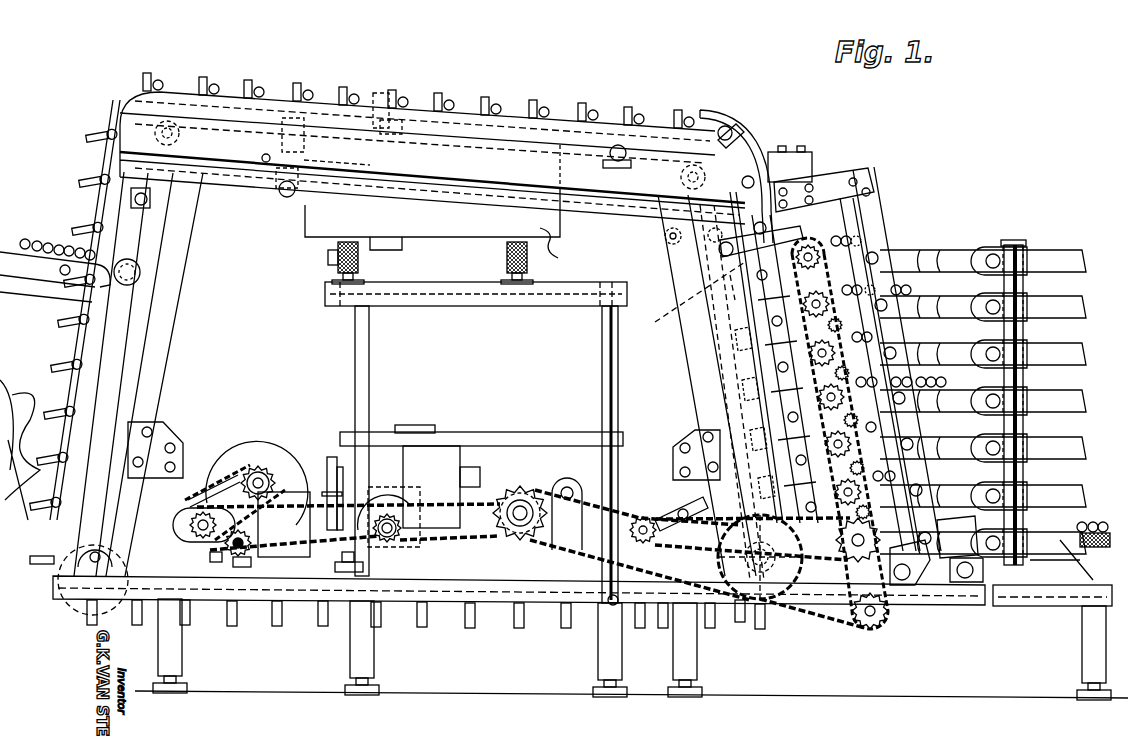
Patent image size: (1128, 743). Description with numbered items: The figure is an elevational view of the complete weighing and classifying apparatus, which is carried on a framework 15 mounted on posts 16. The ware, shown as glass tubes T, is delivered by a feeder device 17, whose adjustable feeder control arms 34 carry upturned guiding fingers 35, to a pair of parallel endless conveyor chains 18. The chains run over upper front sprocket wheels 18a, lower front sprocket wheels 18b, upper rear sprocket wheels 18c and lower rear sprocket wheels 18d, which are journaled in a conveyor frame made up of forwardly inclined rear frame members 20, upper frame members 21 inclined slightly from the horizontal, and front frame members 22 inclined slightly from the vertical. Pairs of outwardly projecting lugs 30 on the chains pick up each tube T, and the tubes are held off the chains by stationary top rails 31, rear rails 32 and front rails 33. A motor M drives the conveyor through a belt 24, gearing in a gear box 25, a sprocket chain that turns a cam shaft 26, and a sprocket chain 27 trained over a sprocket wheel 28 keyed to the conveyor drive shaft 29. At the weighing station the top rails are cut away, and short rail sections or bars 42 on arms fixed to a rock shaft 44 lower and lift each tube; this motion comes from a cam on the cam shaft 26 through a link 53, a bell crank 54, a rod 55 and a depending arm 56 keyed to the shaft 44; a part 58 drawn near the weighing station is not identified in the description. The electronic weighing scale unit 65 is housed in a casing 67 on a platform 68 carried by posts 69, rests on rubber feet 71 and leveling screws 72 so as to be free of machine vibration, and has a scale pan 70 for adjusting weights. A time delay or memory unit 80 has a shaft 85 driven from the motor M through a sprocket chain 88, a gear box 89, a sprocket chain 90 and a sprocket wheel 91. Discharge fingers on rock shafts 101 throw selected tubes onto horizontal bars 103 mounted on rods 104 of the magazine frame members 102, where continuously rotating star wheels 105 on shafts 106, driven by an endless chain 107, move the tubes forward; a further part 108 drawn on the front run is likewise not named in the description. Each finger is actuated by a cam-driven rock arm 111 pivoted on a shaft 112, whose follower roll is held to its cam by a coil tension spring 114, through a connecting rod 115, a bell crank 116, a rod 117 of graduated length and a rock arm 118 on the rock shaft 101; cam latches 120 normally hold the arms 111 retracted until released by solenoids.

The framework 15 is at (460, 603).
The posts 16 is at (184, 640).
The feeder device 17 is at (57, 273).
The endless conveyor chains 18 is at (80, 332).
The upper front sprocket wheels 18a is at (668, 150).
The lower front sprocket wheels 18b is at (806, 610).
The upper rear sprocket wheels 18c is at (270, 168).
The lower rear sprocket wheels 18d is at (125, 596).
The rear frame members 20 is at (180, 299).
The upper frame members 21 is at (266, 160).
The front frame members 22 is at (700, 362).
The belt 24 is at (332, 456).
The gear box 25 is at (380, 487).
The cam shaft 26 is at (525, 505).
The sprocket chain 27 is at (643, 518).
The sprocket wheel 28 is at (745, 612).
The conveyor drive shaft 29 is at (760, 557).
The lugs 30 is at (566, 608).
The top rails 31 is at (405, 112).
The rear rails 32 is at (64, 382).
The front rails 33 is at (755, 413).
The feeder control arms 34 is at (35, 262).
The upturned guiding fingers 35 is at (57, 242).
The rail sections 42 is at (396, 128).
The rock shaft 44 is at (275, 133).
The link 53 is at (718, 246).
The bell crank 54 is at (698, 218).
The rod 55 is at (395, 188).
The depending arm 56 is at (285, 197).
The guide 58 is at (381, 100).
The electronic weighing scale unit 65 is at (360, 150).
The casing 67 is at (554, 243).
The platform 68 is at (466, 282).
The posts 69 is at (602, 350).
The scale pan 70 is at (370, 262).
The feet 71 is at (338, 250).
The leveling screws 72 is at (343, 270).
The time delay unit 80 is at (282, 427).
The shaft 85 is at (272, 480).
The sprocket chain 88 is at (268, 520).
The gear box 89 is at (190, 500).
The sprocket chain 90 is at (228, 478).
The sprocket wheel 91 is at (204, 515).
The rock shafts 101 is at (715, 380).
The magazine frame members 102 is at (875, 220).
The horizontal bars 103 is at (908, 262).
The rods 104 is at (878, 252).
The star wheels 105 is at (812, 224).
The shafts 106 is at (812, 248).
The endless chain 107 is at (888, 358).
The guide rail 108 is at (774, 357).
The rock arm 111 is at (610, 500).
The shaft 112 is at (570, 488).
The coil tension spring 114 is at (490, 550).
The connecting rods 115 is at (660, 572).
The bell cranks 116 is at (720, 548).
The rods 117 is at (722, 400).
The rock arms 118 is at (692, 292).
The cam latches 120 is at (608, 599).
The motor M is at (460, 453).
The glass tubes T is at (42, 232).